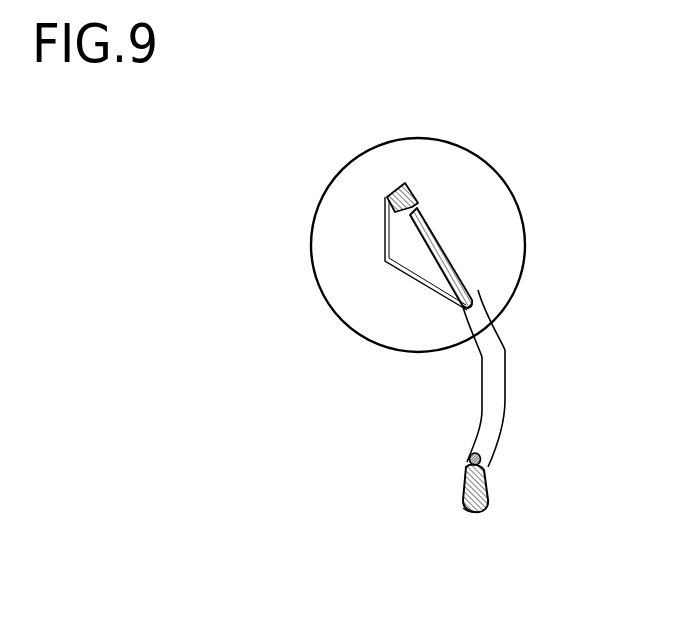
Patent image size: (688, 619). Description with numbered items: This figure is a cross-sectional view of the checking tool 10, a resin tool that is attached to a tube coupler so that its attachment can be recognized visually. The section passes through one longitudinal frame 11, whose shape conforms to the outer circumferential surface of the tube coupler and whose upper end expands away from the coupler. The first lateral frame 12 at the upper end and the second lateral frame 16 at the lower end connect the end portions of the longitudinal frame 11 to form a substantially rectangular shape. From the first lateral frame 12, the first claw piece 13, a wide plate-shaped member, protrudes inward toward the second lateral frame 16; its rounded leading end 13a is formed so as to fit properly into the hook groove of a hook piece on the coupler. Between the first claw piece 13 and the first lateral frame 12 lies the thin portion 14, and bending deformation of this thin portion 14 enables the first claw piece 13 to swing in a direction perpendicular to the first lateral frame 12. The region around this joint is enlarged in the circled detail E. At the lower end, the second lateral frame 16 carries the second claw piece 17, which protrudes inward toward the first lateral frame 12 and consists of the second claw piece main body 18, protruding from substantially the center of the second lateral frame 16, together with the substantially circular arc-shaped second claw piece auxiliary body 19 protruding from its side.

The enlarged view region E is at (512, 195).
The checking tool 10 is at (522, 335).
The longitudinal frame 11 is at (497, 400).
The first lateral frame 12 is at (392, 190).
The first claw piece 13 is at (428, 214).
The leading end 13a is at (470, 301).
The thin portion 14 is at (386, 235).
The second lateral frame 16 is at (480, 513).
The second claw piece 17 is at (457, 452).
The second claw piece main body 18 is at (481, 479).
The second claw piece auxiliary body 19 is at (481, 455).